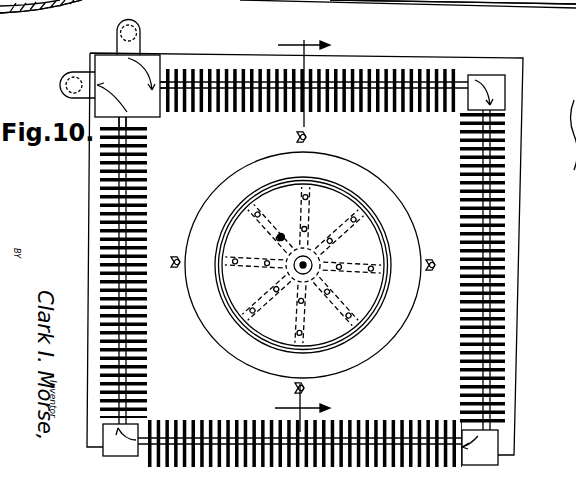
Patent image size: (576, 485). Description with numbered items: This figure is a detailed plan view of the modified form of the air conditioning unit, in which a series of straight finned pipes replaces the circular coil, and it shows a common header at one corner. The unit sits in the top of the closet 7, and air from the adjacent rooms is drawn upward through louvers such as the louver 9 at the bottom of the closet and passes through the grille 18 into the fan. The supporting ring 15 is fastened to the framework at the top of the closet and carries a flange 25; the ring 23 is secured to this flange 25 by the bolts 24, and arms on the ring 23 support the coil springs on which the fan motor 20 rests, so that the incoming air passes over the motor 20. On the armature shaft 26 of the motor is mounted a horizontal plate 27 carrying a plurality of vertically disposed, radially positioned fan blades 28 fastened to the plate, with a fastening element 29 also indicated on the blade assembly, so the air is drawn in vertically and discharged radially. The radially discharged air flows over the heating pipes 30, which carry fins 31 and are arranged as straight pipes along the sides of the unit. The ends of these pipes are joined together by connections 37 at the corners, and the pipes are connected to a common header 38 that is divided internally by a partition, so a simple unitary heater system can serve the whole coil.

The closet 7 is at (63, 2).
The grille 18 is at (413, 0).
The supporting ring 15 is at (521, 214).
The common header 38 is at (152, 66).
The heating pipes 30 is at (162, 108).
The connections 37 is at (470, 80).
The fins 31 is at (462, 152).
The flange 25 is at (187, 353).
The ring 23 is at (243, 323).
The bolts 24 is at (310, 138).
The louver 9 is at (302, 230).
The fan motor 20 is at (303, 255).
The horizontal plate 27 is at (340, 198).
The fan blades 28 is at (305, 212).
The blade rivet 29 is at (281, 237).
The armature shaft 26 is at (305, 264).